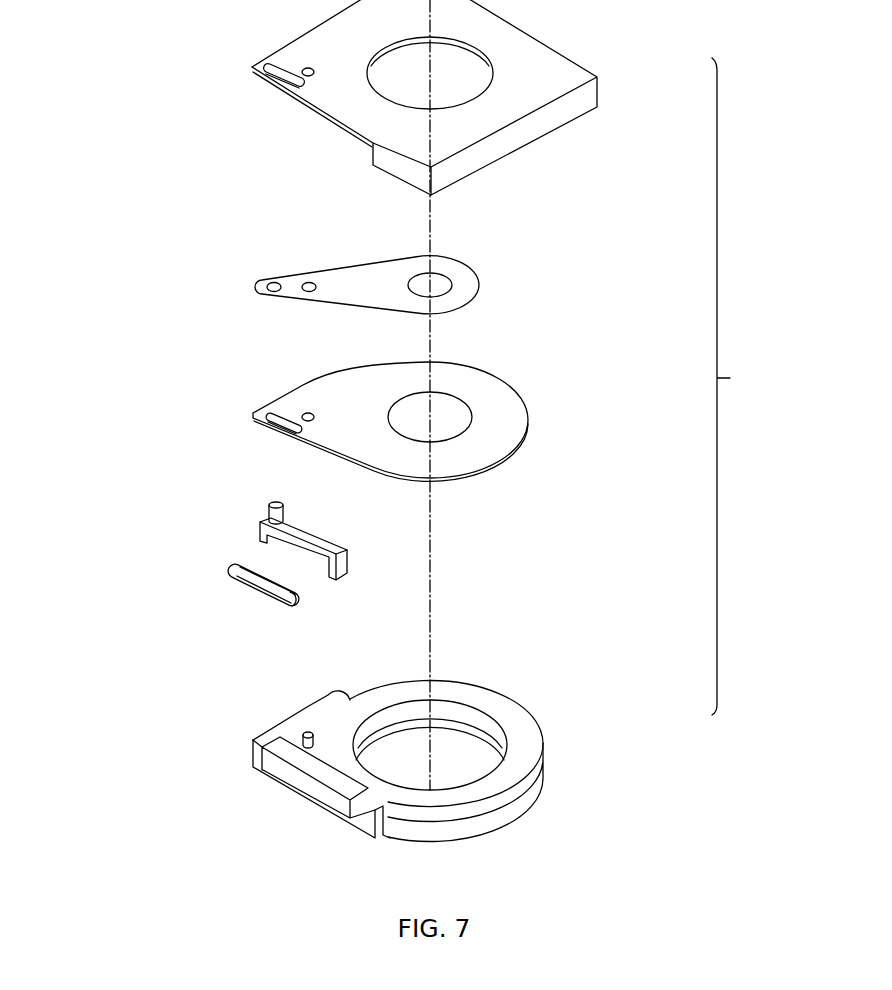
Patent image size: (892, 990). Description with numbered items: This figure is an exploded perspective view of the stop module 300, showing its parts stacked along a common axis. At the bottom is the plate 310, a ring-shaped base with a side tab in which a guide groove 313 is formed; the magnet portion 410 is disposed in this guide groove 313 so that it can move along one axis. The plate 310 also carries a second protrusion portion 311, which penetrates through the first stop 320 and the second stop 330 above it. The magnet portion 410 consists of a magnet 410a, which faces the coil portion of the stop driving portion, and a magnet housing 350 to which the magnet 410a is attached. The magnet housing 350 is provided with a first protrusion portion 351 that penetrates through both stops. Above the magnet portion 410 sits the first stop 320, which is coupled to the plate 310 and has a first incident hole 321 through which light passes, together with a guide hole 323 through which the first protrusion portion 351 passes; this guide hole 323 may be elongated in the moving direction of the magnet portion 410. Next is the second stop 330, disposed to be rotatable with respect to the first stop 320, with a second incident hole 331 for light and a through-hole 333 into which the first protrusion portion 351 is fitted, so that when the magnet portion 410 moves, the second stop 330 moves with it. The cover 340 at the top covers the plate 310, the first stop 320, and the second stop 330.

The stop module 300 is at (743, 386).
The plate 310 is at (435, 763).
The second protrusion portion 311 is at (307, 731).
The guide groove 313 is at (310, 784).
The first stop 320 is at (434, 404).
The first incident hole 321 is at (398, 408).
The guide hole 323 is at (270, 412).
The second stop 330 is at (434, 259).
The second incident hole 331 is at (418, 283).
The through-hole 333 is at (268, 279).
The cover 340 is at (560, 72).
The magnet housing 350 is at (434, 539).
The first protrusion portion 351 is at (272, 503).
The magnet portion 410 is at (200, 582).
The magnet 410a is at (248, 588).